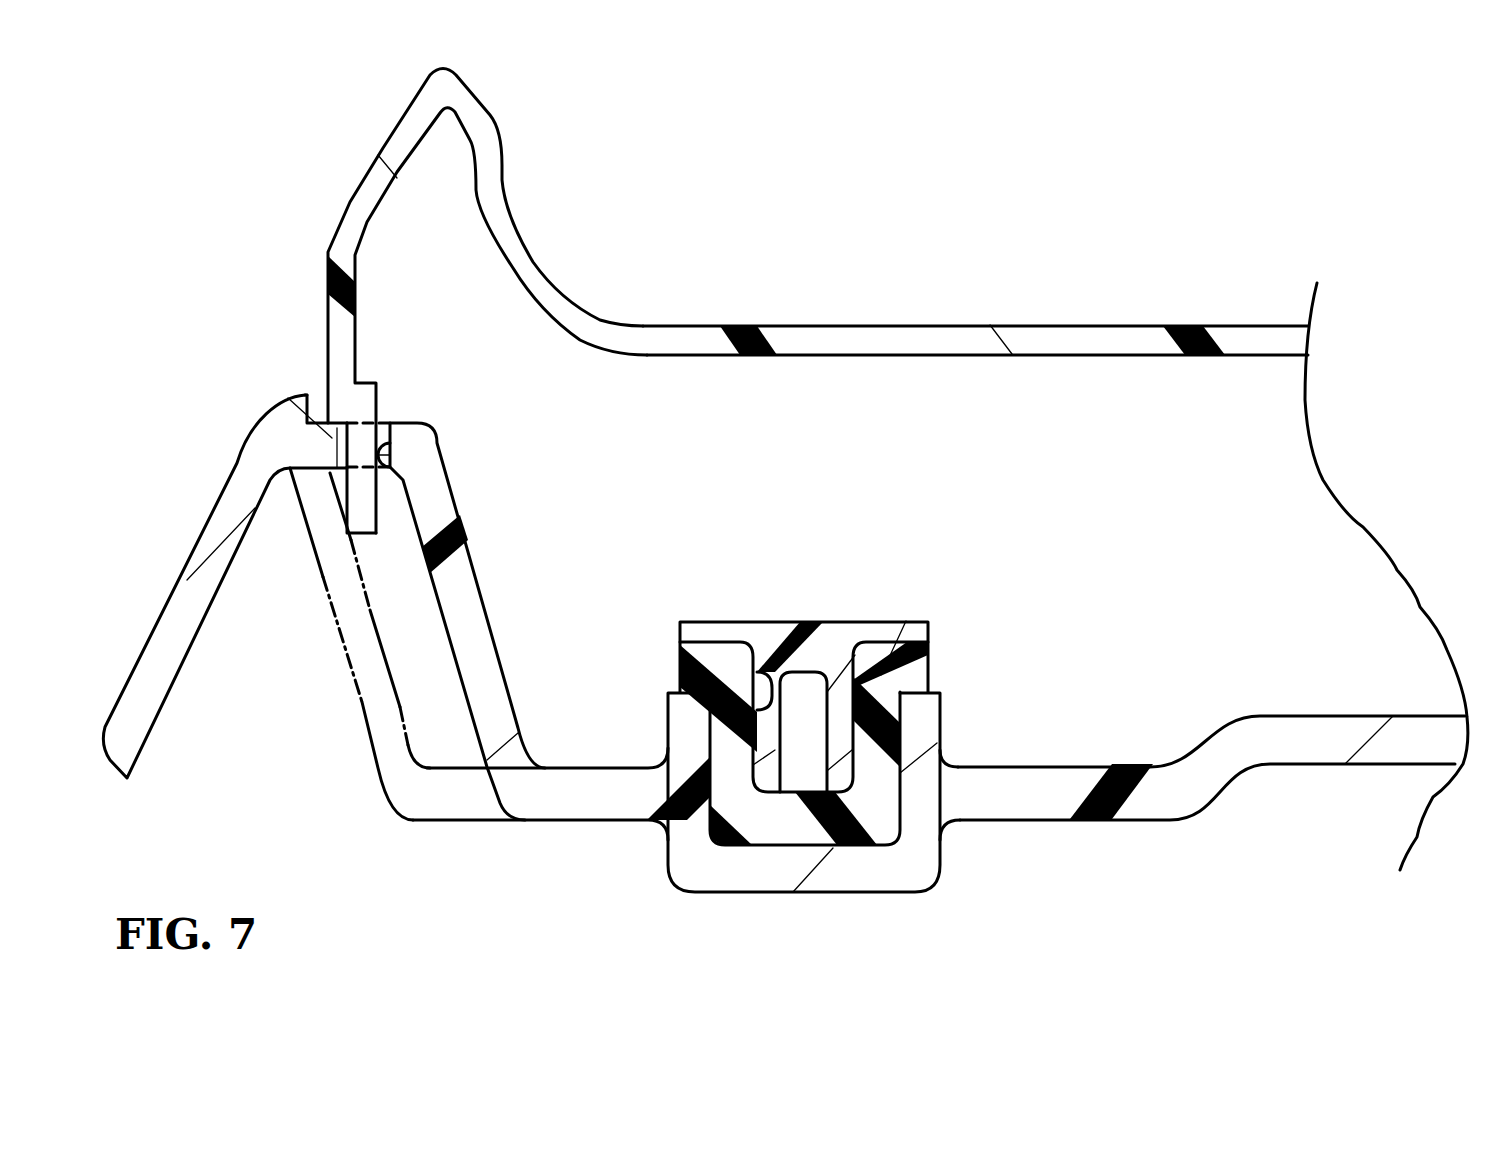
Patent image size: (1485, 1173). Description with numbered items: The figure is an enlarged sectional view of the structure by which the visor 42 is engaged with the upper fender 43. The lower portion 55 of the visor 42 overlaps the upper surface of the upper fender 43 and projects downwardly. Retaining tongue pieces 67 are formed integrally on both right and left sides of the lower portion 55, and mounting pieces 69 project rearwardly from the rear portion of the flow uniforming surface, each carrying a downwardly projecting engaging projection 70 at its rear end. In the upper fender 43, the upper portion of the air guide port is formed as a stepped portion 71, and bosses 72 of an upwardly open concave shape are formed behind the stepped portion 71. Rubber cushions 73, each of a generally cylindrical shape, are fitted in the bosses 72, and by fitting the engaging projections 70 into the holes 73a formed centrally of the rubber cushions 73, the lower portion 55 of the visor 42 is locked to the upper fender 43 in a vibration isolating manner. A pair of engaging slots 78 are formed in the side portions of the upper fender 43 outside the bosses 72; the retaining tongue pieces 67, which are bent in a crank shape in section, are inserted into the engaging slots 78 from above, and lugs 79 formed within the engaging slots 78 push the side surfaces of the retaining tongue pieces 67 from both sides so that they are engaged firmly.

The visor 42 is at (322, 180).
The upper fender 43 is at (1248, 827).
The lower portion 55 is at (933, 328).
The retaining tongue piece 67 is at (363, 535).
The mounting piece 69 is at (843, 630).
The engaging projection 70 is at (770, 770).
The stepped portion 71 is at (577, 768).
The boss 72 is at (883, 877).
The rubber cushion 73 is at (893, 653).
The hole 73a is at (760, 655).
The engaging slot 78 is at (390, 485).
The lug 79 is at (322, 427).